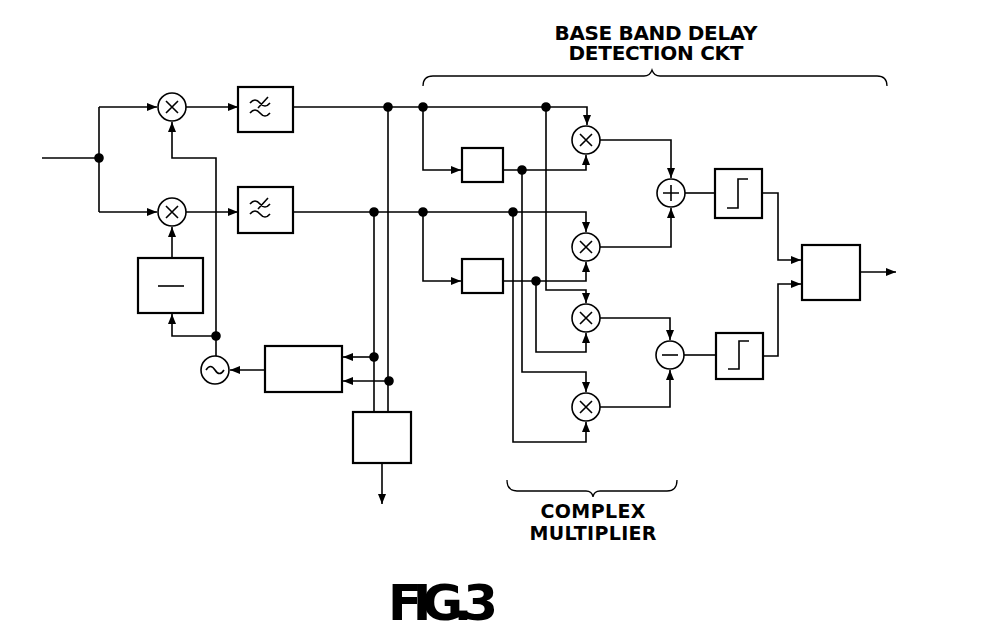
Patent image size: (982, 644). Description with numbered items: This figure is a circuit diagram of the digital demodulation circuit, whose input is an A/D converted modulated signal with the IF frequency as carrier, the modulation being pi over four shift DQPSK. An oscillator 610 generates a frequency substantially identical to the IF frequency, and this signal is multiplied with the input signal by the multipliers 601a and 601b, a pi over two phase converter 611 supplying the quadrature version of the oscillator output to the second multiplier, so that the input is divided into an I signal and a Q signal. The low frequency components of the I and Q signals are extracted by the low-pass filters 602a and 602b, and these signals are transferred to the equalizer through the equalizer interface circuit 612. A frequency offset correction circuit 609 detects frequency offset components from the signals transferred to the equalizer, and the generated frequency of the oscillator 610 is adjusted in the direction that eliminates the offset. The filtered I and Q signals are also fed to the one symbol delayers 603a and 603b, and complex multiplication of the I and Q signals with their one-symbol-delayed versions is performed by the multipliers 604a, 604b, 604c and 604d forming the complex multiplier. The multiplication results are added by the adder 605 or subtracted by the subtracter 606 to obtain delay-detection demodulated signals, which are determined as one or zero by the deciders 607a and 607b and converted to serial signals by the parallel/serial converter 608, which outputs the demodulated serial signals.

The multiplier 601a is at (172, 93).
The multiplier 601b is at (160, 223).
The low-pass filter 602a is at (289, 87).
The low-pass filter 602b is at (294, 188).
The 1 symbol delayer 603a is at (483, 148).
The 1 symbol delayer 603b is at (470, 295).
The multiplier 604a is at (599, 130).
The multiplier 604b is at (597, 258).
The multiplier 604c is at (597, 308).
The multiplier 604d is at (597, 418).
The adder 605 is at (681, 183).
The subtracter 606 is at (687, 343).
The decider 607a is at (755, 169).
The decider 607b is at (757, 380).
The parallel/serial converter 608 is at (830, 245).
The frequency offset correction circuit 609 is at (297, 393).
The oscillator 610 is at (213, 385).
The π/2 phase converter 611 is at (145, 314).
The equalizer interface circuit 612 is at (412, 437).